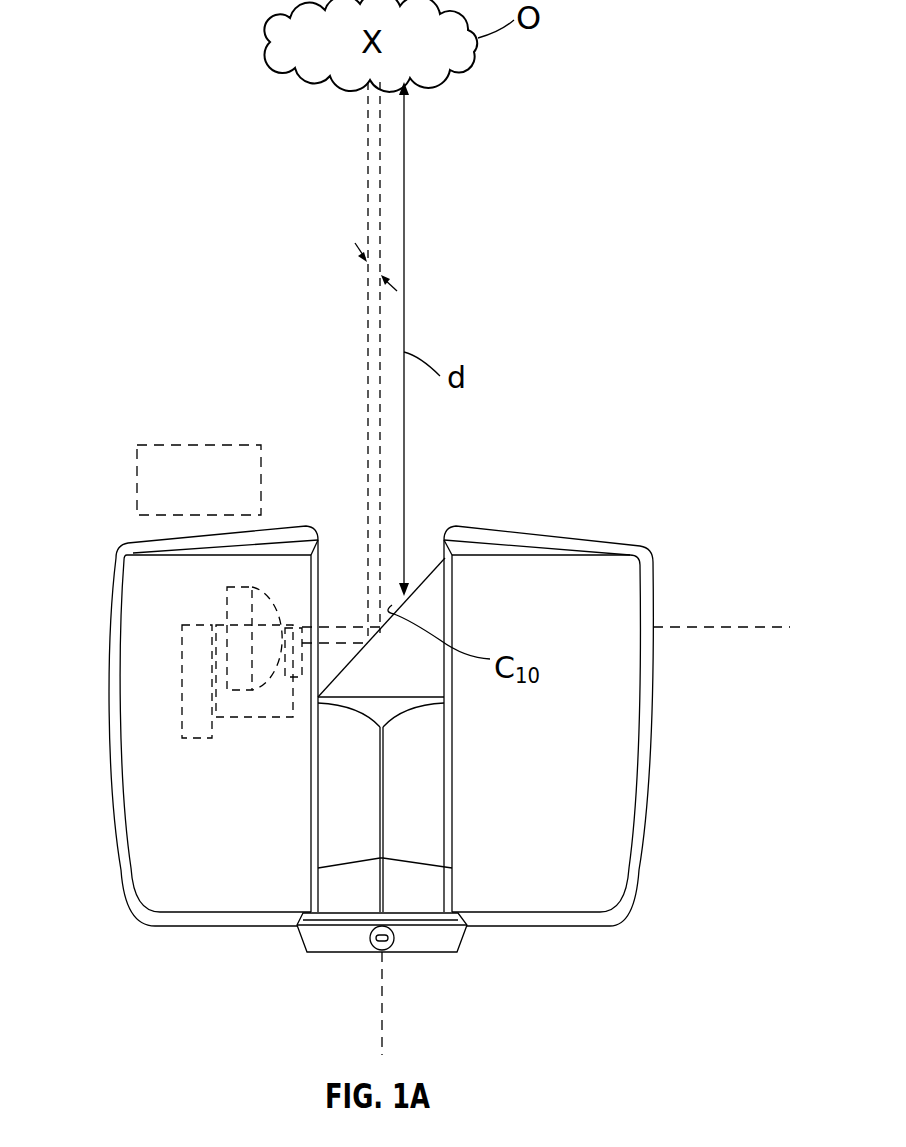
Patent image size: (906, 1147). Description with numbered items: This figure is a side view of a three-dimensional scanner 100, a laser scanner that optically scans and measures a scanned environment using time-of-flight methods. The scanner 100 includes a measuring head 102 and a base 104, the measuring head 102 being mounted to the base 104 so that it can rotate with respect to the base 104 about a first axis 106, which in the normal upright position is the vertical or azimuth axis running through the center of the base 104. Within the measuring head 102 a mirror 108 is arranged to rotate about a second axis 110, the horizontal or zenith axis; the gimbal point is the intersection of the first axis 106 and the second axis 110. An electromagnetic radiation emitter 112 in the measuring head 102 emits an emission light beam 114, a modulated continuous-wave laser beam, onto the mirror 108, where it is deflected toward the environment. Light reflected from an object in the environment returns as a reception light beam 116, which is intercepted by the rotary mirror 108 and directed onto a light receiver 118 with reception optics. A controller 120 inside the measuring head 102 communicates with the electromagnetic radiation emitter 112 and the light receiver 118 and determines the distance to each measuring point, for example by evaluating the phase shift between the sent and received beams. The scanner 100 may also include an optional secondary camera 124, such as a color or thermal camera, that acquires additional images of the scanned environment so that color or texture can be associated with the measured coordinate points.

The 3D scanner 100 is at (155, 202).
The measuring head 102 is at (640, 870).
The base 104 is at (324, 956).
The first axis 106 is at (384, 1003).
The mirror 108 is at (425, 682).
The second axis 110 is at (722, 628).
The electromagnetic radiation emitter 112 is at (292, 682).
The emission light beam 114 is at (380, 191).
The reception light beam 116 is at (370, 340).
The light receiver 118 is at (238, 626).
The controller 120 is at (193, 658).
The secondary camera 124 is at (192, 442).